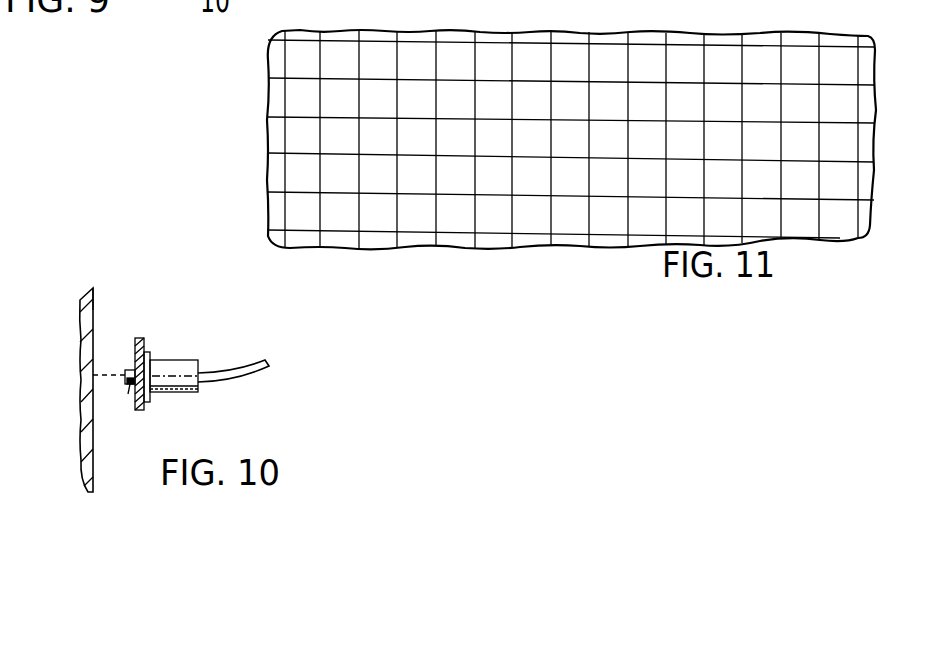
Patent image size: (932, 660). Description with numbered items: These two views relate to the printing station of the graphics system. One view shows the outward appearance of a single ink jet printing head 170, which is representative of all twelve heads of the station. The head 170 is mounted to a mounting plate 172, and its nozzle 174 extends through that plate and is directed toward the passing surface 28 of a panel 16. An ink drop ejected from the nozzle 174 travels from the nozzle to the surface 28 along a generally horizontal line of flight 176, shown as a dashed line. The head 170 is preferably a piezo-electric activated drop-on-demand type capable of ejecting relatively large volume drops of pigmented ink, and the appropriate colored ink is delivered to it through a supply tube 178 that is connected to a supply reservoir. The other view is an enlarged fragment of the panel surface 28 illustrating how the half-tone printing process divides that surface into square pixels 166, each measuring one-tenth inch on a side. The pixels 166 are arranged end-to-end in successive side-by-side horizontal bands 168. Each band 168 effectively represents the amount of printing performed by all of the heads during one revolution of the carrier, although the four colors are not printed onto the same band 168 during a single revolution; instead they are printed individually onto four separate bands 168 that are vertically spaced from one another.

In FIG. 10, the panel 16 is at (87, 300).
In FIG. 10, the surface 28 is at (95, 308).
In FIG. 11, the pixels 166 is at (340, 57).
In FIG. 11, the horizontal bands 168 is at (249, 117).
In FIG. 10, the ink jet printing head 170 is at (174, 368).
In FIG. 10, the mounting plate 172 is at (145, 340).
In FIG. 10, the nozzle 174 is at (135, 386).
In FIG. 10, the line of flight 176 is at (101, 372).
In FIG. 10, the supply tube 178 is at (247, 378).